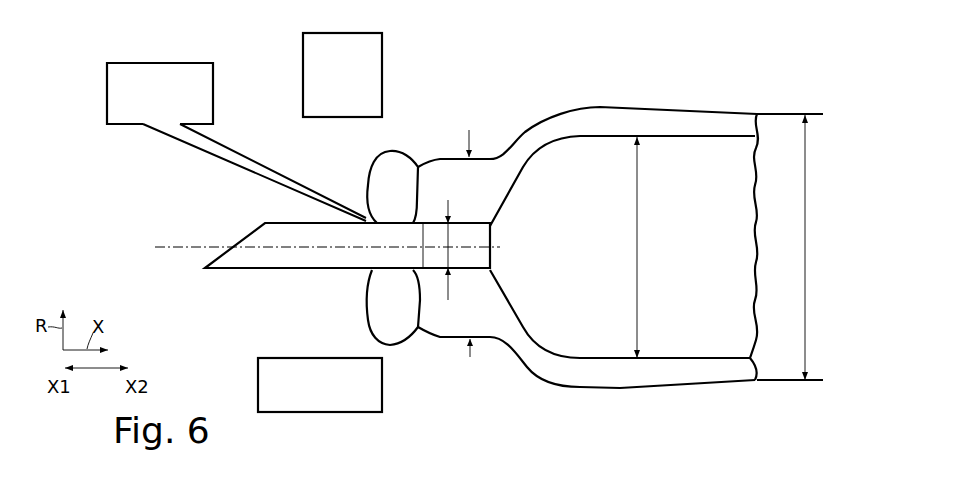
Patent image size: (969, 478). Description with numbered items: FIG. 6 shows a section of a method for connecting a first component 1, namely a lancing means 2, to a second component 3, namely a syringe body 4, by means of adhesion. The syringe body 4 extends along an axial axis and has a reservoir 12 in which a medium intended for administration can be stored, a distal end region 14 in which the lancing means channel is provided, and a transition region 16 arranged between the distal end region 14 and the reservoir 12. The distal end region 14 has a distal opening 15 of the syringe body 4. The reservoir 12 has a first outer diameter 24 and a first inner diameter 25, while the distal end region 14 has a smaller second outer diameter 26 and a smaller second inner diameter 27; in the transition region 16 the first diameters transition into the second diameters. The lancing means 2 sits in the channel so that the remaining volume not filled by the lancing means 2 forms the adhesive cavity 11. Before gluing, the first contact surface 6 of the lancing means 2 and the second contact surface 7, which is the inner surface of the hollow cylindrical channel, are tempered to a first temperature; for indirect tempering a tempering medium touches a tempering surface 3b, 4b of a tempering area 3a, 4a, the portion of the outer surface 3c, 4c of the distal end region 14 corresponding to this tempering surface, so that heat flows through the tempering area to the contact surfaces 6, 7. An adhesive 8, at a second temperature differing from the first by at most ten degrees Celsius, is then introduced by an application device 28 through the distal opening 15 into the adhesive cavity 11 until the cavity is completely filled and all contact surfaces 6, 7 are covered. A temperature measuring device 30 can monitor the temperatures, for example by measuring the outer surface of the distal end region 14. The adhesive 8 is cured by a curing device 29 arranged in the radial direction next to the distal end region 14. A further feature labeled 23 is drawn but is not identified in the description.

The first component 1 is at (327, 277).
The lancing means 2 is at (228, 272).
The second component 3 is at (402, 318).
The syringe body 4 is at (438, 330).
The tempering area 3a is at (618, 127).
The tempering surface 3b is at (618, 127).
The outer surface 3c is at (618, 127).
The tempering area 4a is at (618, 127).
The tempering surface 4b is at (618, 127).
The outer surface 4c is at (618, 127).
The first contact surface 6 is at (586, 347).
The second contact surface 7 is at (586, 347).
The adhesive 8 is at (186, 147).
The adhesive cavity 11 is at (423, 222).
The reservoir 12 is at (618, 226).
The distal end region 14 is at (424, 165).
The distal opening 15 is at (364, 274).
The transition region 16 is at (490, 272).
The tapered transition region 23 is at (620, 161).
The first outer diameter 24 is at (808, 222).
The first inner diameter 25 is at (632, 165).
The second outer diameter 26 is at (469, 355).
The second inner diameter 27 is at (448, 215).
The application device 28 is at (146, 63).
The curing device 29 is at (307, 413).
The temperature measuring device 30 is at (302, 53).